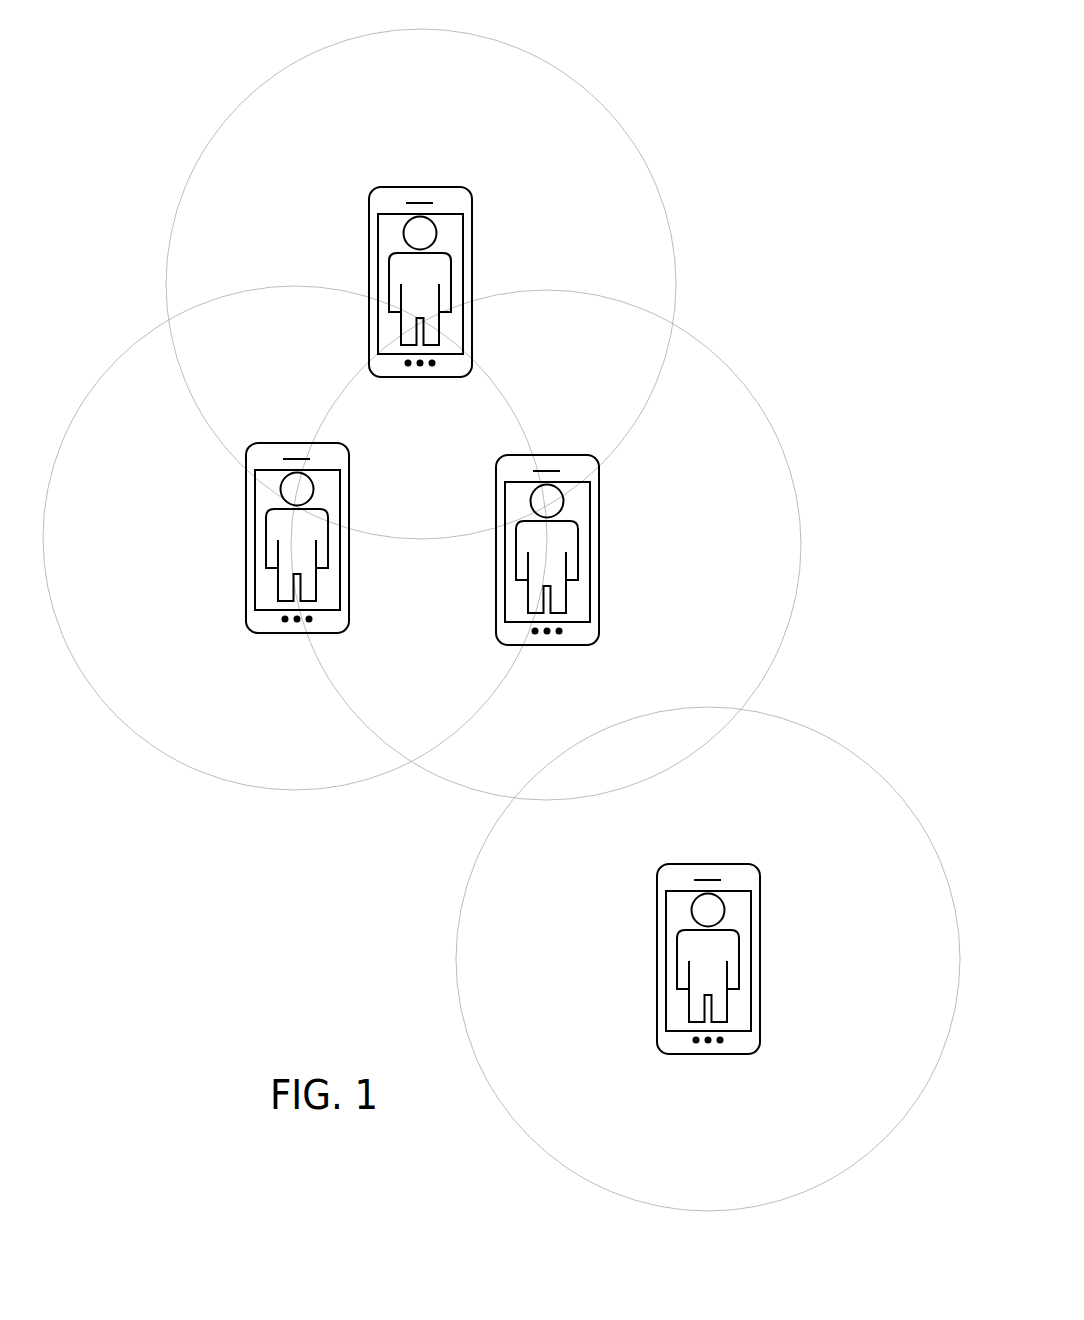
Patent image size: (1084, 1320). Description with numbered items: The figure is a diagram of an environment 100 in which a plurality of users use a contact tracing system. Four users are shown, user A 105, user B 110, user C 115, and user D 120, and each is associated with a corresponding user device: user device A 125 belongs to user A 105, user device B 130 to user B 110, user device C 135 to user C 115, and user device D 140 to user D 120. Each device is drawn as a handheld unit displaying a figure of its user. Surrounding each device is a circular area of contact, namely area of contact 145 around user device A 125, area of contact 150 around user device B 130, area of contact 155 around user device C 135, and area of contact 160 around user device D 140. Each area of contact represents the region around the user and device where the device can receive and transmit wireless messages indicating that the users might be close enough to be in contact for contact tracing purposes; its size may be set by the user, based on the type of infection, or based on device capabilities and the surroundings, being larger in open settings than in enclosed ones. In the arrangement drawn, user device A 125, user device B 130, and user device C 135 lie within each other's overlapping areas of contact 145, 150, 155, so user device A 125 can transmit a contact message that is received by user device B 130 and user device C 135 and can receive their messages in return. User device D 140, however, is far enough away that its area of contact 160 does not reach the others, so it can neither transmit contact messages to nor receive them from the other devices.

The environment 100 is at (758, 91).
The user A 105 is at (441, 252).
The user B 110 is at (320, 508).
The user C 115 is at (565, 520).
The user D 120 is at (726, 925).
The user device A 125 is at (432, 187).
The user device B 130 is at (328, 443).
The user device C 135 is at (560, 455).
The user device D 140 is at (716, 864).
The area of contact 145 is at (514, 45).
The area of contact 150 is at (242, 289).
The area of contact 155 is at (724, 366).
The area of contact 160 is at (807, 721).